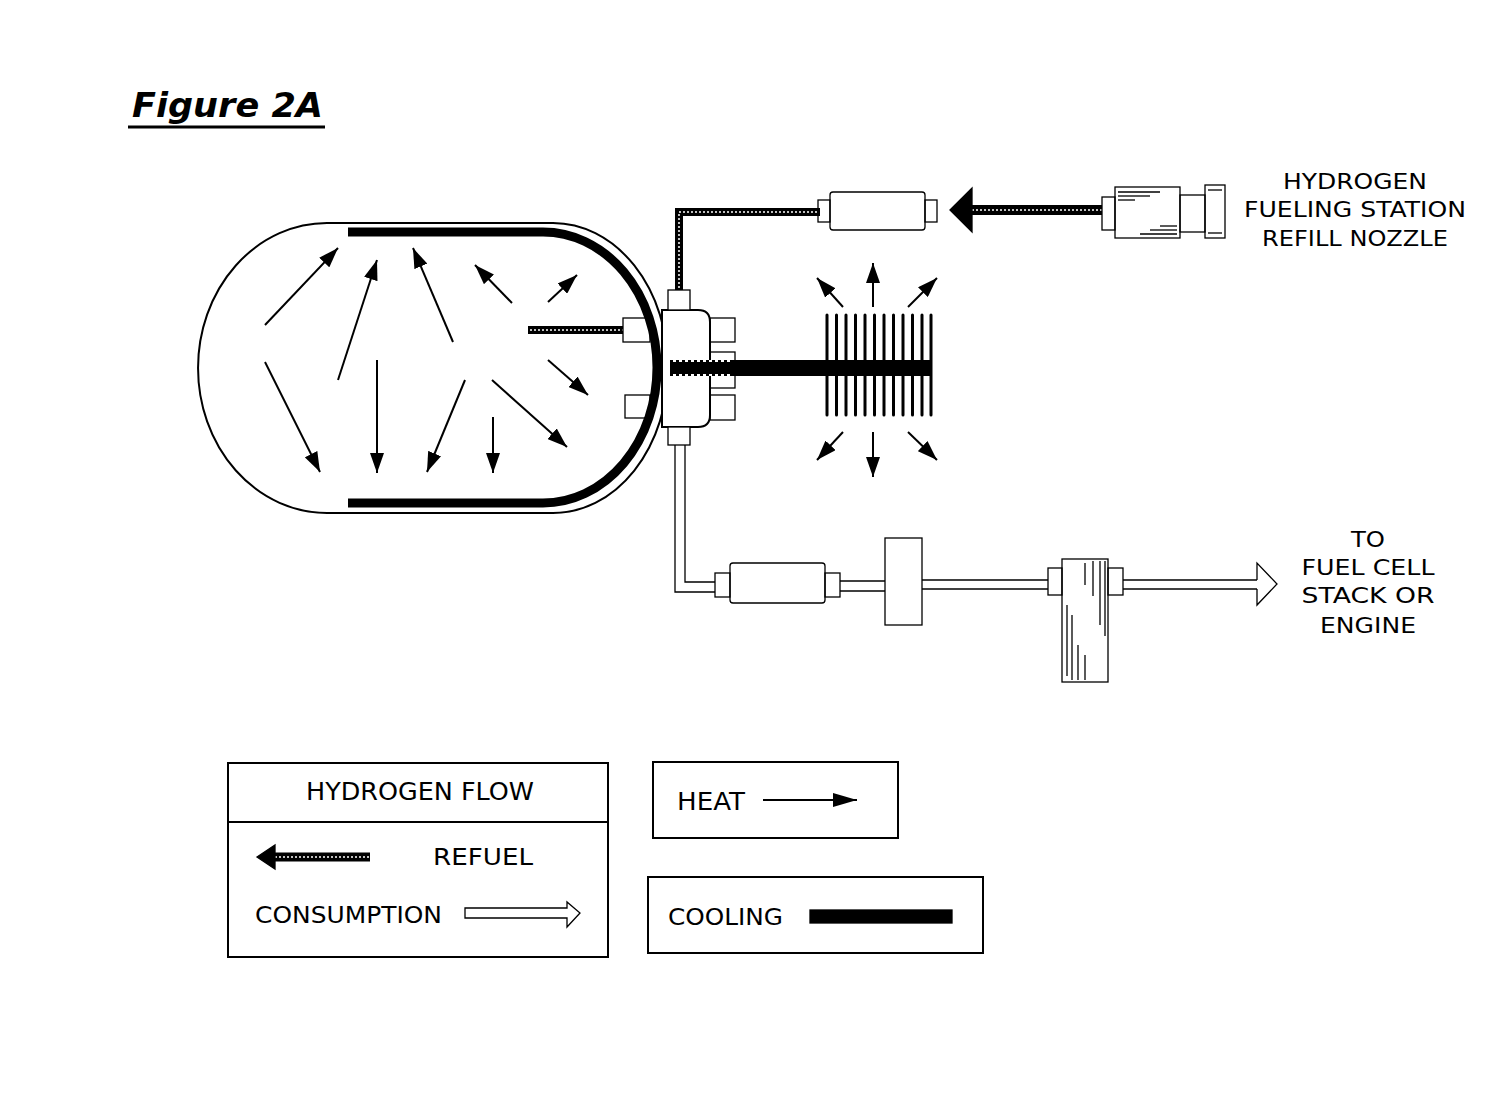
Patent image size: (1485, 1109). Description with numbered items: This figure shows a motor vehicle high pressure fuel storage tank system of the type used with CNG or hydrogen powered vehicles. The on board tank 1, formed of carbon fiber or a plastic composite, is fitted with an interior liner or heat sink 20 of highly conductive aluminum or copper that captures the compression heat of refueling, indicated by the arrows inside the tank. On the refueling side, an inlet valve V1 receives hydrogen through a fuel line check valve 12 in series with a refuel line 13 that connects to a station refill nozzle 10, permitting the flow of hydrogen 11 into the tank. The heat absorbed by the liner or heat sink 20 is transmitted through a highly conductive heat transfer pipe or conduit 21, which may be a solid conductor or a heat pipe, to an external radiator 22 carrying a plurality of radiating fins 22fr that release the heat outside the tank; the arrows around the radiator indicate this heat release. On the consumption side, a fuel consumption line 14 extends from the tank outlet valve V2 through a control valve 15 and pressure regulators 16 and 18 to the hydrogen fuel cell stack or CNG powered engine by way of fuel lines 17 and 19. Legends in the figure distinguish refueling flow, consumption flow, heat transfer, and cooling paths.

The on board tank 1 is at (223, 458).
The interior liner or heat sink 20 is at (463, 223).
The refuel line 13 is at (740, 208).
The fuel line check valve 12 is at (877, 192).
The flow of hydrogen 11 is at (1027, 216).
The station refill nozzle 10 is at (1150, 238).
The inlet valve V1 is at (722, 318).
The tank outlet valve V2 is at (722, 420).
The heat transfer pipe or conduit 21 is at (785, 360).
The external radiator 22 is at (931, 370).
The radiating fins 22fr is at (933, 402).
The fuel consumption line 14 is at (675, 573).
The control valve 15 is at (778, 603).
The pressure regulator 16 is at (903, 625).
The fuel line 17 is at (978, 580).
The pressure regulator 18 is at (1083, 682).
The fuel line 19 is at (1198, 580).